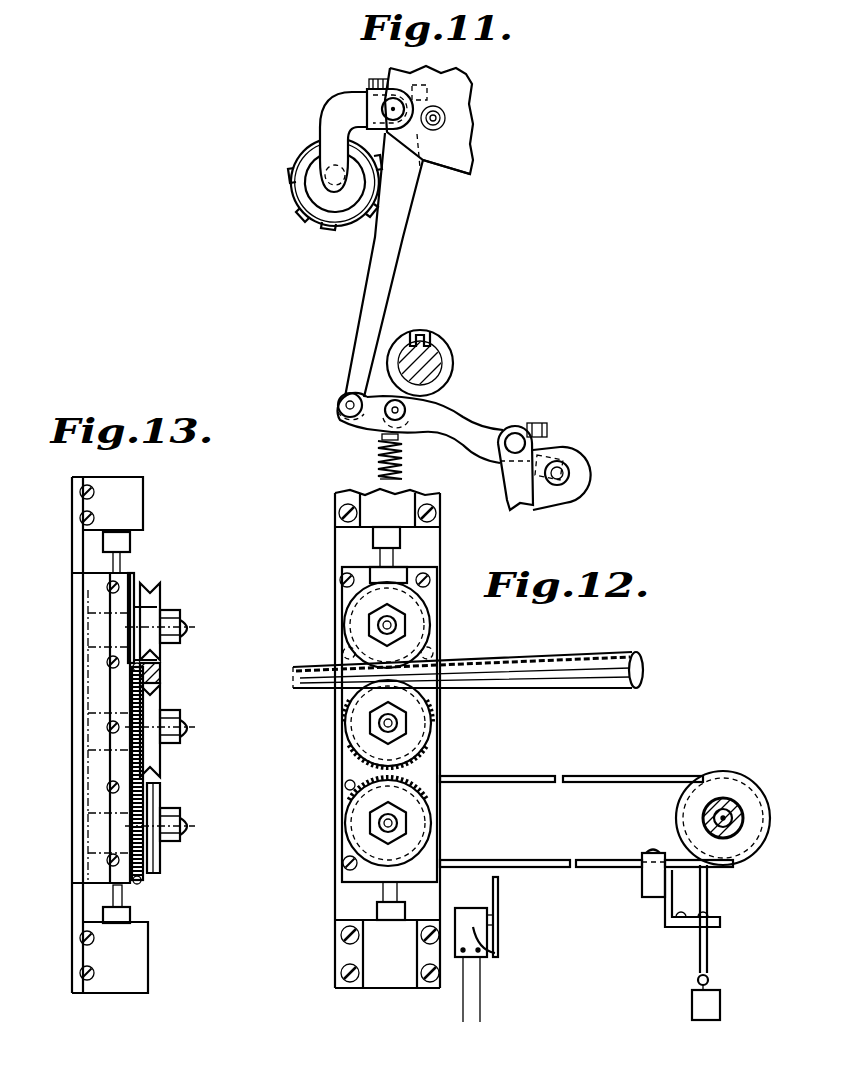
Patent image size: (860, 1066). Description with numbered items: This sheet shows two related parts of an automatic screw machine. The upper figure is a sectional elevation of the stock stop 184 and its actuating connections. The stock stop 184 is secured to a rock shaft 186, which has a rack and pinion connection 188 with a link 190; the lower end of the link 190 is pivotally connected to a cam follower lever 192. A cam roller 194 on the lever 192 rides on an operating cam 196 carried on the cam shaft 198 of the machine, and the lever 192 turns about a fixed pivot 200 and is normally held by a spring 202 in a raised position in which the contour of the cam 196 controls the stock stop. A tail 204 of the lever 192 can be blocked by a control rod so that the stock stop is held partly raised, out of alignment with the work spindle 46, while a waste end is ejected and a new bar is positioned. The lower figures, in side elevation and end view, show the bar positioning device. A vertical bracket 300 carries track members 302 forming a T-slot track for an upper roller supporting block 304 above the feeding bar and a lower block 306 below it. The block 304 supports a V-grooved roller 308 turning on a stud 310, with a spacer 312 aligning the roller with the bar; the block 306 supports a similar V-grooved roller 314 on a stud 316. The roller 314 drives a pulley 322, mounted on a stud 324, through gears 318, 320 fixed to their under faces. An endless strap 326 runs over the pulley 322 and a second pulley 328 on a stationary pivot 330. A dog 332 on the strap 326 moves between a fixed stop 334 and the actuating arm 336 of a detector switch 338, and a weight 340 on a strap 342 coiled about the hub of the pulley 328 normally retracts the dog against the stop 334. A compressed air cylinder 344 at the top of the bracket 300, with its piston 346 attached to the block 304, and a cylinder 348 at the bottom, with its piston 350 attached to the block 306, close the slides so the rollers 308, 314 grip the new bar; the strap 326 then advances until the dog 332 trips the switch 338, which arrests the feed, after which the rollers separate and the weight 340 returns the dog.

In FIG. 11, the work spindle 46 is at (322, 186).
In FIG. 11, the stock stop 184 is at (332, 124).
In FIG. 11, the rock shaft 186 is at (403, 108).
In FIG. 11, the rack and pinion connection 188 is at (425, 84).
In FIG. 11, the link 190 is at (381, 263).
In FIG. 11, the cam follower lever 192 is at (465, 418).
In FIG. 11, the cam roller 194 is at (382, 418).
In FIG. 11, the operating cam 196 is at (447, 352).
In FIG. 11, the cam shaft 198 is at (421, 373).
In FIG. 11, the fixed pivot 200 is at (517, 440).
In FIG. 11, the spring 202 is at (379, 462).
In FIG. 11, the tail 204 is at (543, 457).
In FIG. 12, the bracket 300 is at (340, 897).
In FIG. 12, the track members 302 is at (360, 568).
In FIG. 12, the roller supporting block 304 is at (397, 572).
In FIG. 13, the roller supporting block 304 is at (118, 605).
In FIG. 12, the second roller supporting block 306 is at (360, 770).
In FIG. 13, the second roller supporting block 306 is at (120, 760).
In FIG. 12, the roller 308 is at (417, 605).
In FIG. 13, the roller 308 is at (158, 591).
In FIG. 12, the stud 310 is at (380, 625).
In FIG. 13, the stud 310 is at (185, 630).
In FIG. 13, the spacer 312 is at (133, 607).
In FIG. 12, the roller 314 is at (415, 704).
In FIG. 13, the roller 314 is at (155, 700).
In FIG. 12, the stud 316 is at (380, 723).
In FIG. 13, the stud 316 is at (186, 728).
In FIG. 13, the gear 318 is at (143, 762).
In FIG. 12, the gear 320 is at (352, 779).
In FIG. 13, the gear 320 is at (140, 882).
In FIG. 12, the pulley 322 is at (358, 832).
In FIG. 13, the pulley 322 is at (160, 798).
In FIG. 12, the stud 324 is at (396, 823).
In FIG. 13, the stud 324 is at (190, 826).
In FIG. 12, the endless strap 326 is at (518, 778).
In FIG. 12, the second pulley 328 is at (732, 786).
In FIG. 12, the stationary pivot 330 is at (730, 816).
In FIG. 12, the dog 332 is at (652, 883).
In FIG. 12, the fixed stop 334 is at (666, 905).
In FIG. 12, the actuating arm 336 is at (498, 893).
In FIG. 12, the detector switch 338 is at (493, 957).
In FIG. 12, the weight 340 is at (693, 1001).
In FIG. 12, the strap 342 is at (700, 947).
In FIG. 12, the compressed air cylinder 344 is at (405, 497).
In FIG. 13, the compressed air cylinder 344 is at (128, 493).
In FIG. 12, the piston 346 is at (387, 556).
In FIG. 13, the piston 346 is at (115, 562).
In FIG. 12, the compressed air cylinder 348 is at (383, 970).
In FIG. 13, the compressed air cylinder 348 is at (130, 950).
In FIG. 12, the piston 350 is at (385, 893).
In FIG. 13, the piston 350 is at (118, 895).